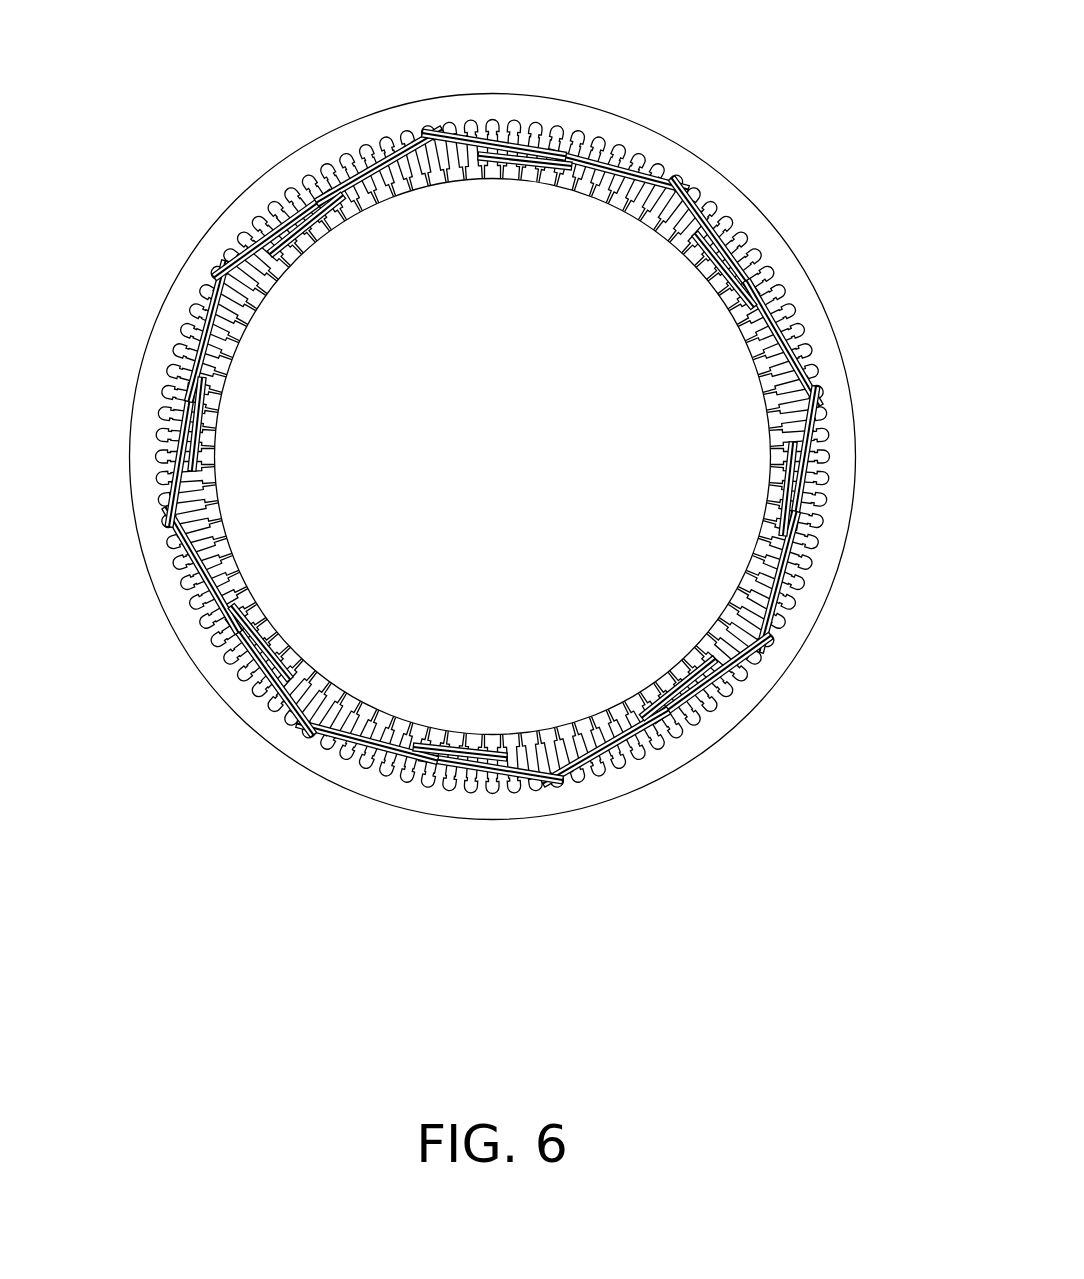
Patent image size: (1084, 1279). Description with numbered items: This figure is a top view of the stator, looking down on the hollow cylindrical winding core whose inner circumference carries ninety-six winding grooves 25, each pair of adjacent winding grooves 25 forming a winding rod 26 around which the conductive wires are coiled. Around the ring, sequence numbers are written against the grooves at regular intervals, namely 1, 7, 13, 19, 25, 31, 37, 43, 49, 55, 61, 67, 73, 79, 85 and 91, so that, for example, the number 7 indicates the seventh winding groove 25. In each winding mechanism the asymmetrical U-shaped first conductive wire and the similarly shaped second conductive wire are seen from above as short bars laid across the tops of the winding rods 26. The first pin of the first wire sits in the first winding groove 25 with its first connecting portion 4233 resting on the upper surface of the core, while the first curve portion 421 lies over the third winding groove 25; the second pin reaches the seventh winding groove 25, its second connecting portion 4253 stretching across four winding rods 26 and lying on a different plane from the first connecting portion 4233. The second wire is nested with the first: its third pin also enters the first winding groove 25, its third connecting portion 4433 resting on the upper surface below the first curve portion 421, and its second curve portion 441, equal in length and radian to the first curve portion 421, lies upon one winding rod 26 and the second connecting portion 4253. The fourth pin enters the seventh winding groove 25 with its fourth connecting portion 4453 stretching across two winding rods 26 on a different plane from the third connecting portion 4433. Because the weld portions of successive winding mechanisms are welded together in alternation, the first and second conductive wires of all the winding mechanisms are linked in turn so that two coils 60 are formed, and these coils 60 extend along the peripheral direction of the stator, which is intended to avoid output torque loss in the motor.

The first winding groove sequence number 1 is at (410, 130).
The seventh winding groove sequence number 7 is at (553, 133).
The thirteenth winding groove sequence number 13 is at (683, 180).
The nineteenth winding groove sequence number 19 is at (760, 280).
The winding groove 25 is at (820, 395).
The winding rod 26 is at (447, 177).
The thirty-first winding groove sequence number 31 is at (818, 520).
The thirty-seventh winding groove sequence number 37 is at (775, 660).
The forty-third winding groove sequence number 43 is at (680, 742).
The forty-ninth winding groove sequence number 49 is at (556, 790).
The fifty-fifth winding groove sequence number 55 is at (425, 785).
The coil 60 is at (327, 167).
The sixty-first winding groove sequence number 61 is at (303, 733).
The sixty-seventh winding groove sequence number 67 is at (210, 637).
The seventy-third winding groove sequence number 73 is at (165, 520).
The seventy-ninth winding groove sequence number 79 is at (170, 382).
The eighty-fifth winding groove sequence number 85 is at (225, 268).
The ninety-first winding groove sequence number 91 is at (308, 185).
The first curve portion 421 is at (480, 118).
The second curve portion 441 is at (500, 137).
The first connecting portion 4233 is at (422, 125).
The second connecting portion 4253 is at (598, 140).
The third connecting portion 4433 is at (432, 177).
The fourth connecting portion 4453 is at (603, 152).